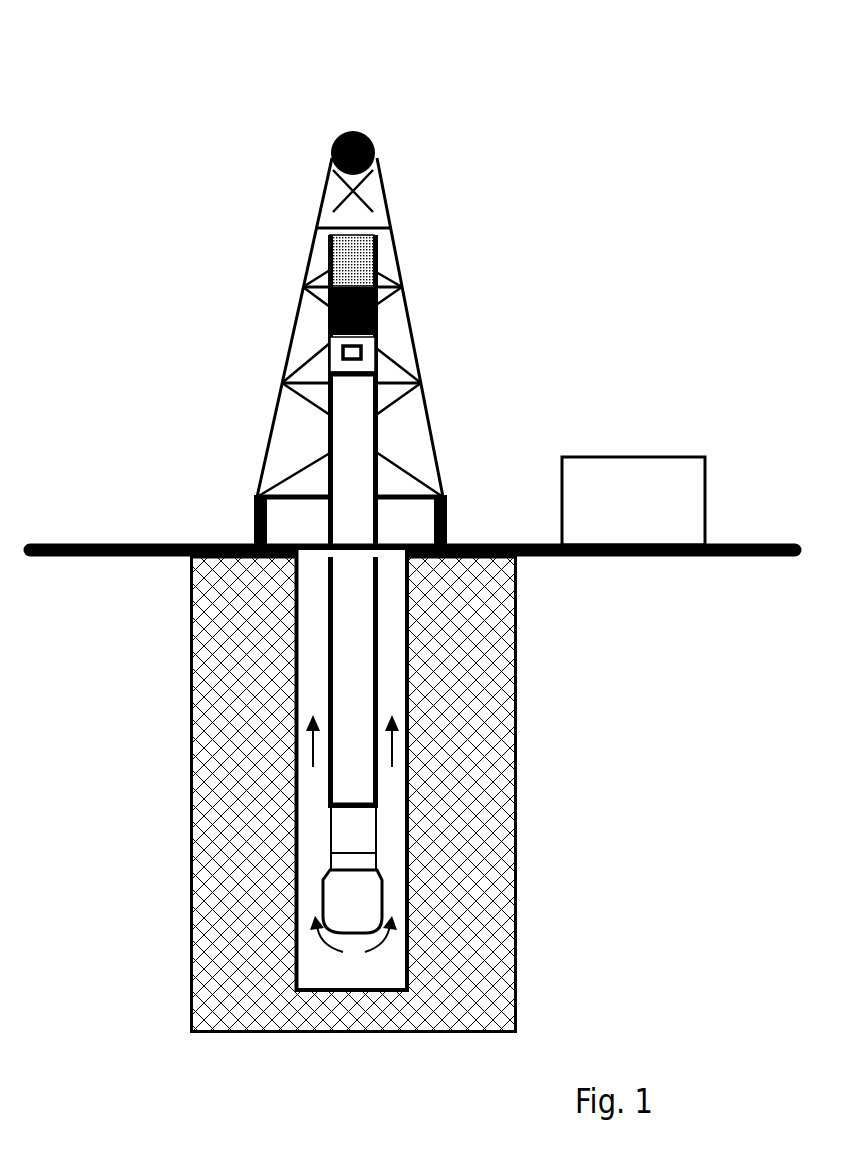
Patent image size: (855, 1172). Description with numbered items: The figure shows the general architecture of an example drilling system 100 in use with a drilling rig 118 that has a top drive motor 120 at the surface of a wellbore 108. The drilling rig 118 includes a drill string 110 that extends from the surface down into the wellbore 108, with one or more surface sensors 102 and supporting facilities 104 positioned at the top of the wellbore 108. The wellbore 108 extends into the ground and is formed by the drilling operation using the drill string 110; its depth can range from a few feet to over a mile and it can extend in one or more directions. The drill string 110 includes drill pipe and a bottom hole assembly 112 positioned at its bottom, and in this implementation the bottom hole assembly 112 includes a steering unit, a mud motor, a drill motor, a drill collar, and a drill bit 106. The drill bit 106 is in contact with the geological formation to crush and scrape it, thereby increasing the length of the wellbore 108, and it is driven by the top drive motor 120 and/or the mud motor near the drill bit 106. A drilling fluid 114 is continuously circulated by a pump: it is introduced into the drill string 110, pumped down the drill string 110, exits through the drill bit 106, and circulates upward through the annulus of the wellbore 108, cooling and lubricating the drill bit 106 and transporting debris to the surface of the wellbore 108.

The drilling system 100 is at (182, 66).
The surface sensors 102 is at (362, 352).
The supporting facilities 104 is at (633, 501).
The drill bit 106 is at (382, 903).
The wellbore 108 is at (297, 604).
The drill string 110 is at (330, 436).
The bottom hole assembly 112 is at (331, 838).
The drilling fluid 114 is at (311, 797).
The drilling rig 118 is at (386, 200).
The top drive motor 120 is at (406, 313).